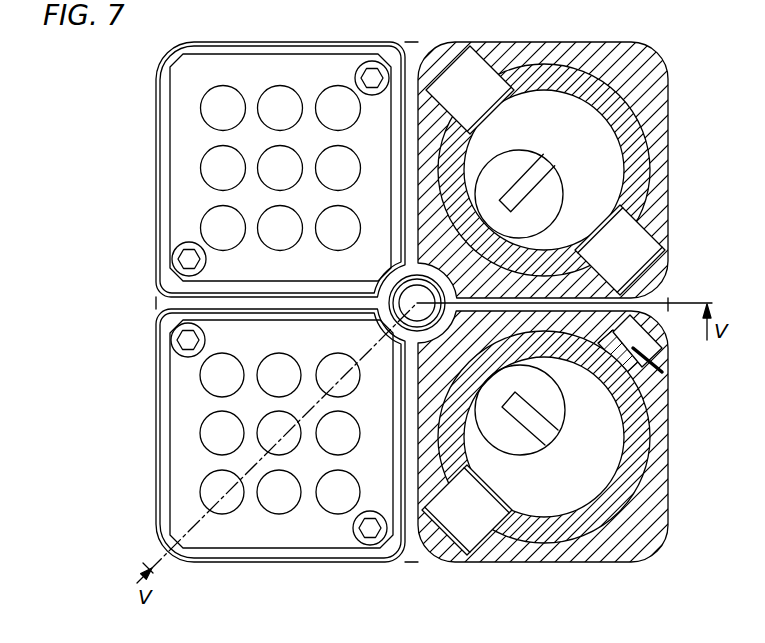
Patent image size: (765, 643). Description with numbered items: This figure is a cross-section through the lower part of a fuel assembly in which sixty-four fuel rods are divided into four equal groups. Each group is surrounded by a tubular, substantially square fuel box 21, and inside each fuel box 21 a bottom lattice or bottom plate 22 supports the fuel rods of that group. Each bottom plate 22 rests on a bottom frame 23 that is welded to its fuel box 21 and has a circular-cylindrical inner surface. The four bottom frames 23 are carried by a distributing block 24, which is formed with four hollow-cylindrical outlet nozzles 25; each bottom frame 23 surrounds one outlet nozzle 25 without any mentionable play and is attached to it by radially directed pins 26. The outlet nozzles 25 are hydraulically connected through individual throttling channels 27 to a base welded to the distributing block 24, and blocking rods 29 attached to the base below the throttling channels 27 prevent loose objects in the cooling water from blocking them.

The fuel box 21 is at (156, 161).
The bottom plate 22 is at (188, 194).
The bottom frame 23 is at (647, 539).
The distributing block 24 is at (662, 293).
The outlet nozzle 25 is at (632, 461).
The radially directed pin 26 is at (645, 253).
The throttling channel 27 is at (553, 192).
The blocking rod 29 is at (531, 444).